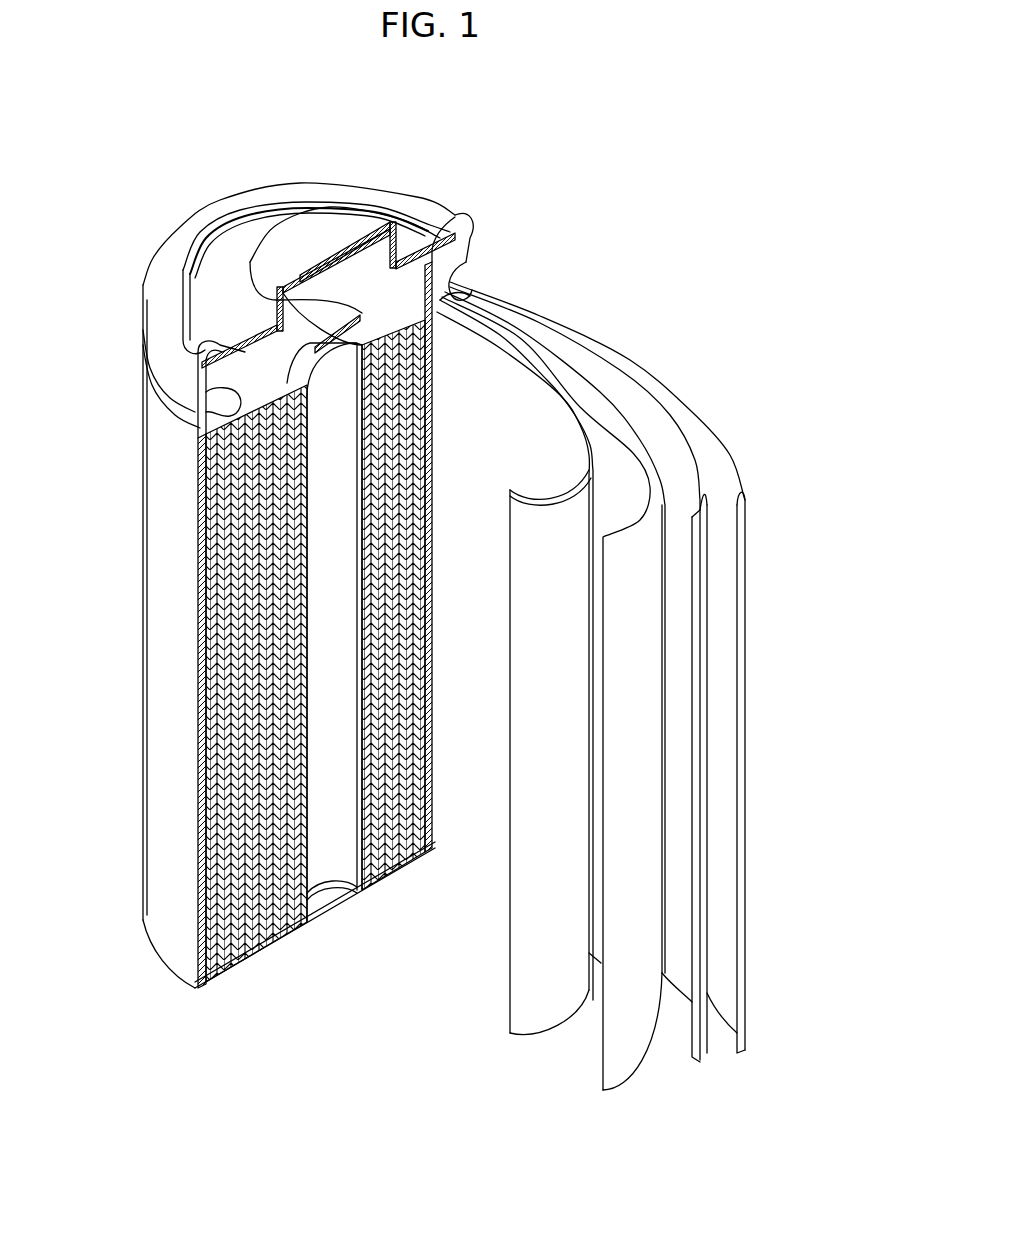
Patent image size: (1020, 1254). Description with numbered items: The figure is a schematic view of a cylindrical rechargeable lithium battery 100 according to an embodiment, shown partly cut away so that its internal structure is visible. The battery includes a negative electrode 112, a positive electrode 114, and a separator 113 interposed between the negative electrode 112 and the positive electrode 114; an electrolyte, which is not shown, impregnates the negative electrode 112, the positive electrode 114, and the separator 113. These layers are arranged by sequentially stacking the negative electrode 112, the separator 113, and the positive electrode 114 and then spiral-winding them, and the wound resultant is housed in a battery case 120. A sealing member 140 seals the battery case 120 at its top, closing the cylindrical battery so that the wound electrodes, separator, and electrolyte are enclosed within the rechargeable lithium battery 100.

The rechargeable lithium battery 100 is at (532, 163).
The negative electrode 112 is at (743, 487).
The separator 113 is at (547, 380).
The positive electrode 114 is at (627, 440).
The battery case 120 is at (160, 586).
The sealing member 140 is at (275, 243).